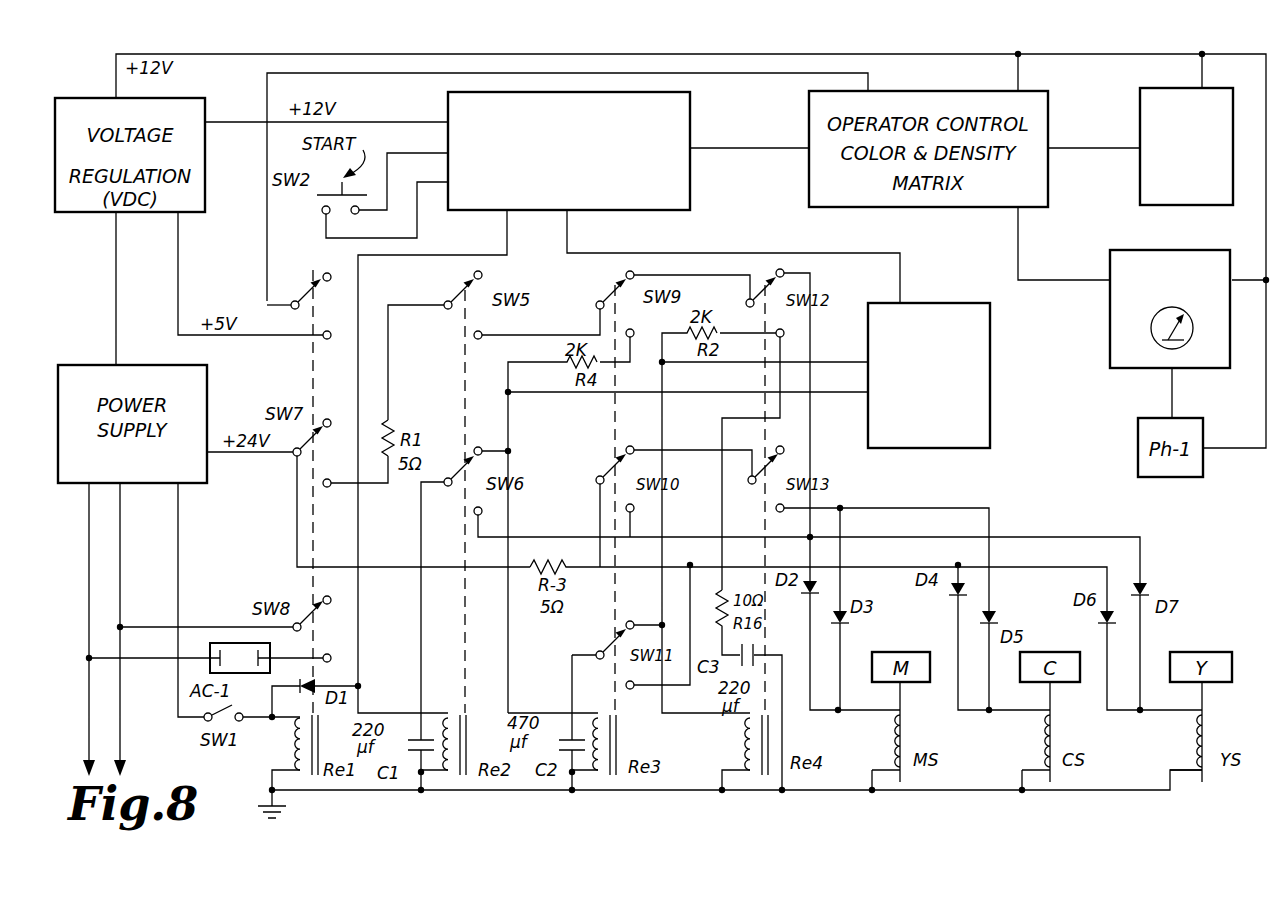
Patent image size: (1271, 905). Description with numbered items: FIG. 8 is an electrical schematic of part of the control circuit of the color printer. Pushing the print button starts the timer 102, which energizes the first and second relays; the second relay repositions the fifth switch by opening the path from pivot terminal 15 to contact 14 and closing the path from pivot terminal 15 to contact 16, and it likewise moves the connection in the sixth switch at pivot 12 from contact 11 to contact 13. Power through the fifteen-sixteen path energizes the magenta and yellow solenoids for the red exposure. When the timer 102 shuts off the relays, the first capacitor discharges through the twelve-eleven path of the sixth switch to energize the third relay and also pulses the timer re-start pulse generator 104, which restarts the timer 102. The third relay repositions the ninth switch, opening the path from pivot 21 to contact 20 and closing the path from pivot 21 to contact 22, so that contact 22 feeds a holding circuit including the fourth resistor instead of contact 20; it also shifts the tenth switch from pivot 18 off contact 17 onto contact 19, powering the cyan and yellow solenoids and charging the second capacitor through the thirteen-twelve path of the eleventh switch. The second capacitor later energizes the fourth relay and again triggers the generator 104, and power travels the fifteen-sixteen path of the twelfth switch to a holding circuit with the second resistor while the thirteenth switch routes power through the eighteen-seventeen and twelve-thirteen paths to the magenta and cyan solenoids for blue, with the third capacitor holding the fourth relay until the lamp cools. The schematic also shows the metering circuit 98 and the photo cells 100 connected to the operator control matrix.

The switch contact 11 is at (642, 528).
The switch pivot terminal 12 is at (601, 556).
The switch contact 13 is at (643, 588).
The switch contact 14 is at (643, 266).
The switch pivot terminal 15 is at (600, 293).
The switch contact 16 is at (643, 325).
The switch contact 17 is at (642, 441).
The switch pivot terminal 18 is at (601, 469).
The switch contact 19 is at (644, 510).
The switch contact 20 is at (645, 267).
The switch pivot terminal 21 is at (601, 294).
The switch contact 22 is at (644, 324).
The metering circuit 98 is at (1170, 309).
The photo cells 100 is at (1186, 146).
The timer 102 is at (569, 151).
The timer re-start pulse generator 104 is at (929, 375).